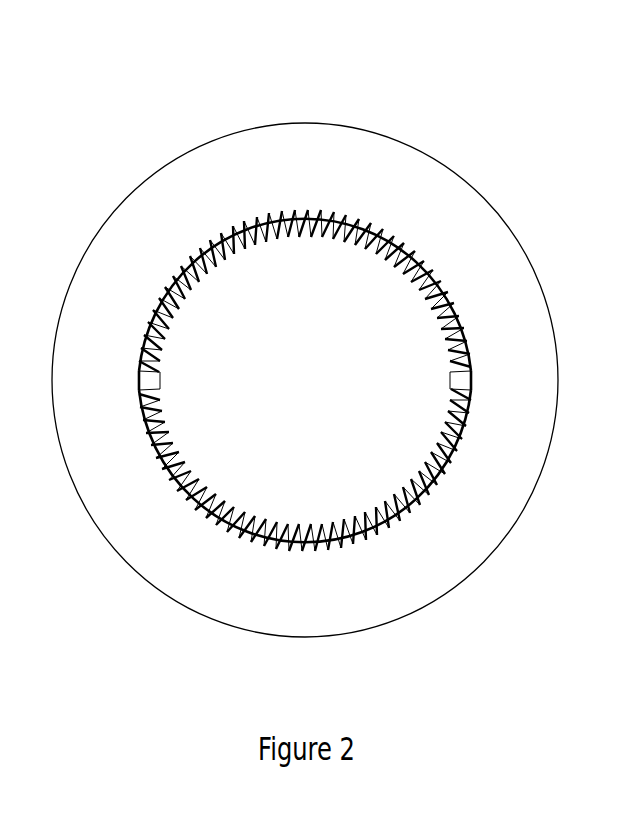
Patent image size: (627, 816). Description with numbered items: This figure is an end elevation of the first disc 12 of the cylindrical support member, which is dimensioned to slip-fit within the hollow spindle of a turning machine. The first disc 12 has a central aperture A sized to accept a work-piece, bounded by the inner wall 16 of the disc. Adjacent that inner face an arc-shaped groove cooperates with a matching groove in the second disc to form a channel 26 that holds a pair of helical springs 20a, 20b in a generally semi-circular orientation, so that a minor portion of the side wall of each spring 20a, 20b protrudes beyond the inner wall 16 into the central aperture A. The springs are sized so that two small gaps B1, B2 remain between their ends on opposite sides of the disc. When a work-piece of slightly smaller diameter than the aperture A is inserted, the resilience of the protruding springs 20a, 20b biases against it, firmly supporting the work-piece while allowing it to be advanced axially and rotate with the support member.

The first disc 12 is at (300, 97).
The helical spring 20a is at (310, 238).
The helical spring 20b is at (318, 552).
The inner wall 16 is at (160, 382).
The channel 26 is at (460, 382).
The gap B1 is at (129, 379).
The gap B2 is at (446, 380).
The central aperture A is at (306, 379).